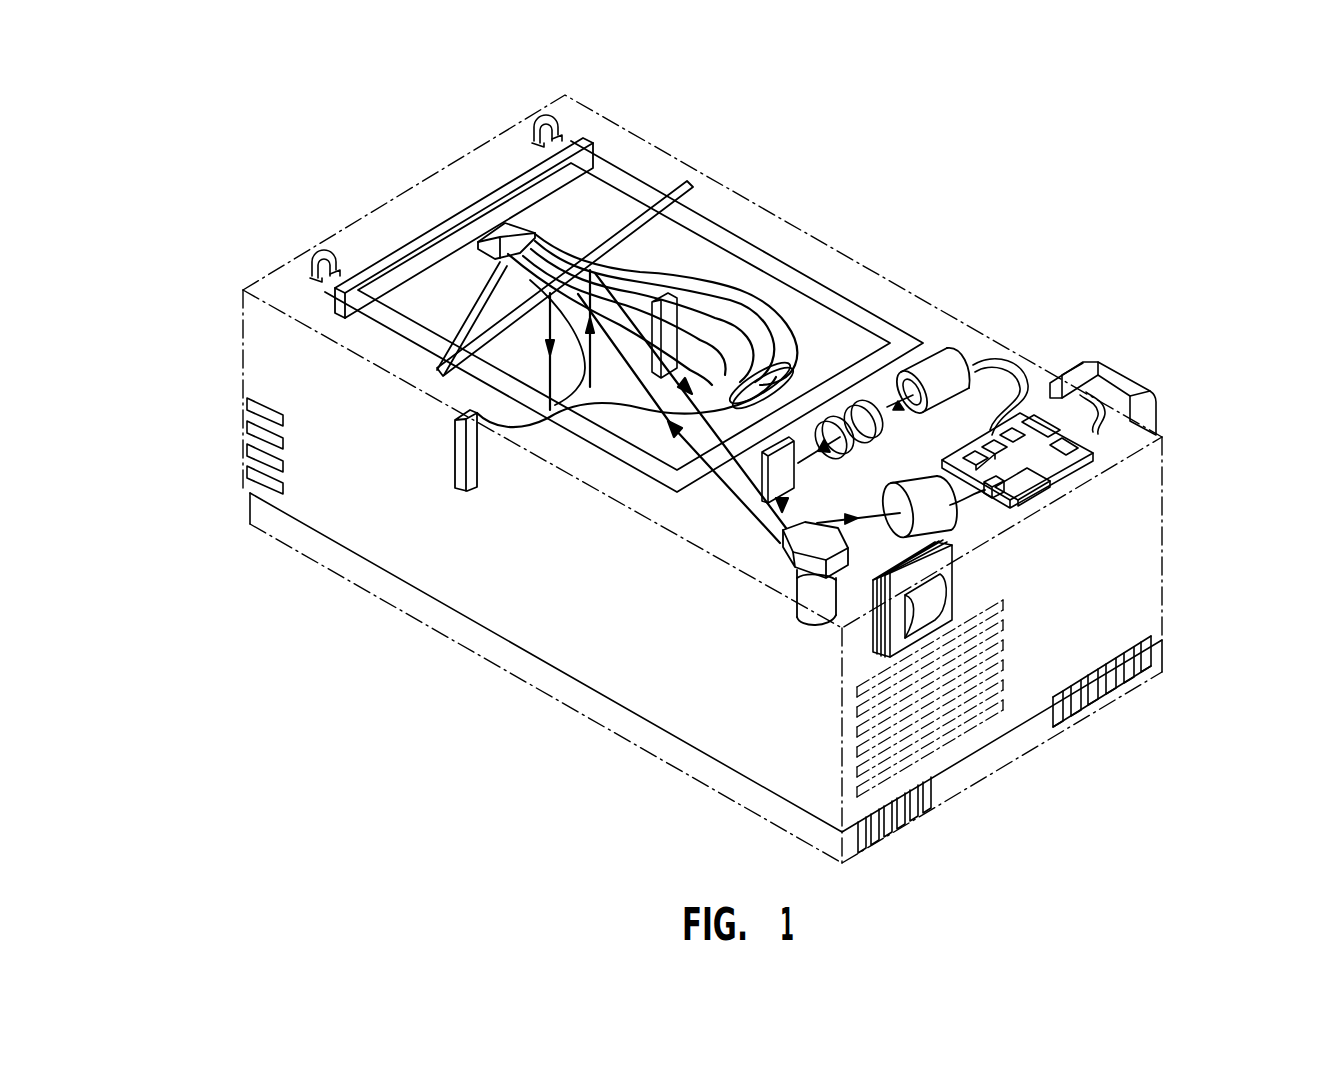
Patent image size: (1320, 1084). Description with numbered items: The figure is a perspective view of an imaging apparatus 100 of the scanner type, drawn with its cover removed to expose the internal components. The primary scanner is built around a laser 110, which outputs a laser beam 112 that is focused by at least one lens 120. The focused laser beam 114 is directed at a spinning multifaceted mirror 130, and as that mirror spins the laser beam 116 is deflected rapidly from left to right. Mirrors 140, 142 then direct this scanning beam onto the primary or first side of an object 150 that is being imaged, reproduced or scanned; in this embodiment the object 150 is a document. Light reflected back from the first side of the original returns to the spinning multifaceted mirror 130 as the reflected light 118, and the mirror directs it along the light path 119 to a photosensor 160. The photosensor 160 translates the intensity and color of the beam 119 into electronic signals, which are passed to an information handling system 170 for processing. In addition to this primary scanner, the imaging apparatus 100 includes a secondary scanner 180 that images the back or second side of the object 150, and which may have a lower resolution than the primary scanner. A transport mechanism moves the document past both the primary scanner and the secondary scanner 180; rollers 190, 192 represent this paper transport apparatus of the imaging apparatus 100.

The imaging apparatus 100 is at (955, 177).
The laser 110 is at (940, 350).
The laser beam 112 is at (917, 407).
The focused laser beam 114 is at (802, 465).
The laser beam 116 is at (690, 452).
The reflected light 118 is at (747, 470).
The light path 119 is at (872, 522).
The lens 120 is at (835, 410).
The spinning multifaceted mirror 130 is at (792, 595).
The mirror 140 is at (700, 185).
The mirror 142 is at (456, 452).
The object 150 is at (768, 300).
The photosensor 160 is at (932, 514).
The information handling system 170 is at (1060, 477).
The secondary scanner 180 is at (601, 137).
The roller 190 is at (322, 254).
The roller 192 is at (548, 118).